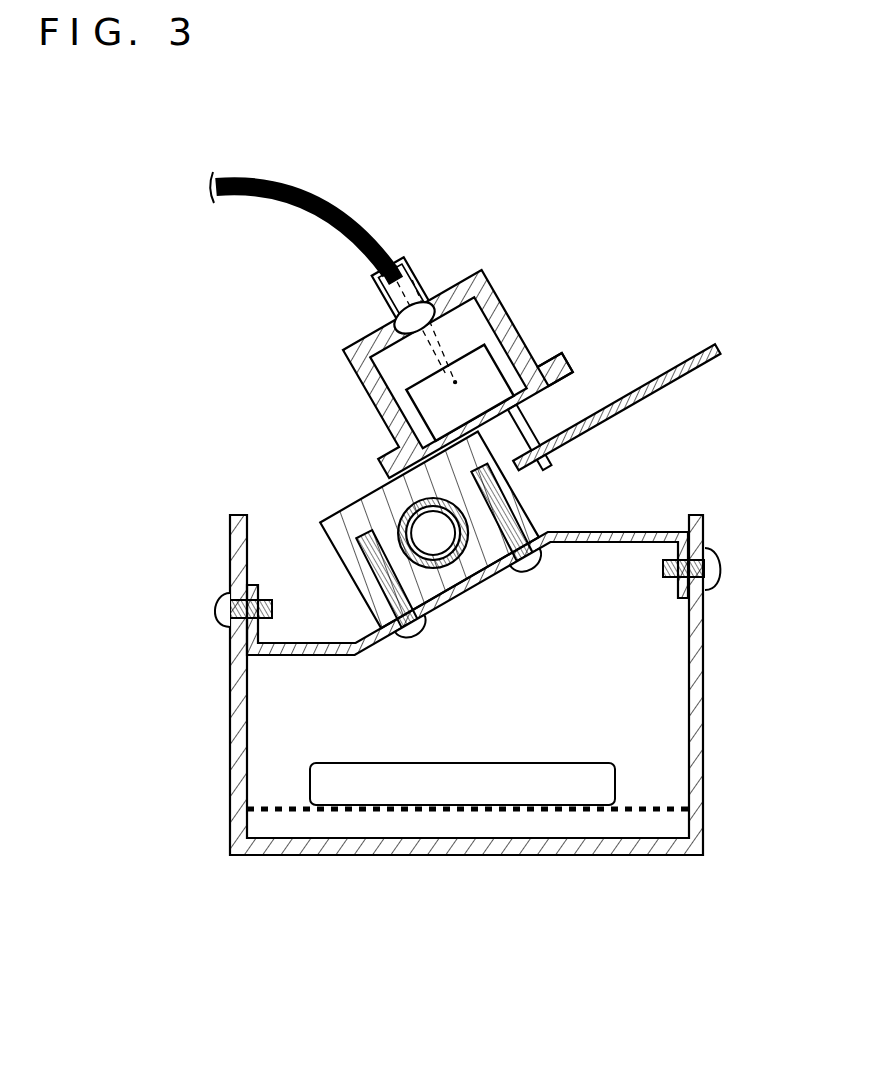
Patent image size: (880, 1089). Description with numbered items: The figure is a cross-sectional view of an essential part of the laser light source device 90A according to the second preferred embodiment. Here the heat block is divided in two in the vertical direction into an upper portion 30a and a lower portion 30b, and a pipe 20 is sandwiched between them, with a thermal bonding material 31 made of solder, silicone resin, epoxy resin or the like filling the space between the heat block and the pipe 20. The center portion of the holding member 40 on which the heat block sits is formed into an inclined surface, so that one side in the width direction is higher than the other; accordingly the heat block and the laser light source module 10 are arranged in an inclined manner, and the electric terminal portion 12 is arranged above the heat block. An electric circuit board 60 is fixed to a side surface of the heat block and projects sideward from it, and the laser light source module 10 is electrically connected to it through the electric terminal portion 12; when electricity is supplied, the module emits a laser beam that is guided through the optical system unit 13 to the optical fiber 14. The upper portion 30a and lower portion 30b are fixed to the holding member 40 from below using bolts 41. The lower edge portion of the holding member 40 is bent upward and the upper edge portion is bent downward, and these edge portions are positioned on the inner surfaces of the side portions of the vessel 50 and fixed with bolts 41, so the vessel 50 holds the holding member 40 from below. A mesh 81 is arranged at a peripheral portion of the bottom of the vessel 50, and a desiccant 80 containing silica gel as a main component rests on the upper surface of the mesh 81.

The laser light source device 90A is at (133, 113).
The laser light source module 10 is at (508, 352).
The electric terminal portion 12 is at (540, 420).
The optical system unit 13 is at (487, 281).
The optical fiber 14 is at (332, 210).
The pipe 20 is at (392, 520).
The upper portion of heat block 30a is at (356, 538).
The lower portion of heat block 30b is at (528, 525).
The thermal bonding material 31 is at (403, 522).
The holding member 40 is at (292, 657).
The bolts 41 is at (212, 605).
The vessel 50 is at (235, 740).
The electric circuit board 60 is at (663, 374).
The desiccant 80 is at (462, 790).
The mesh 81 is at (552, 812).